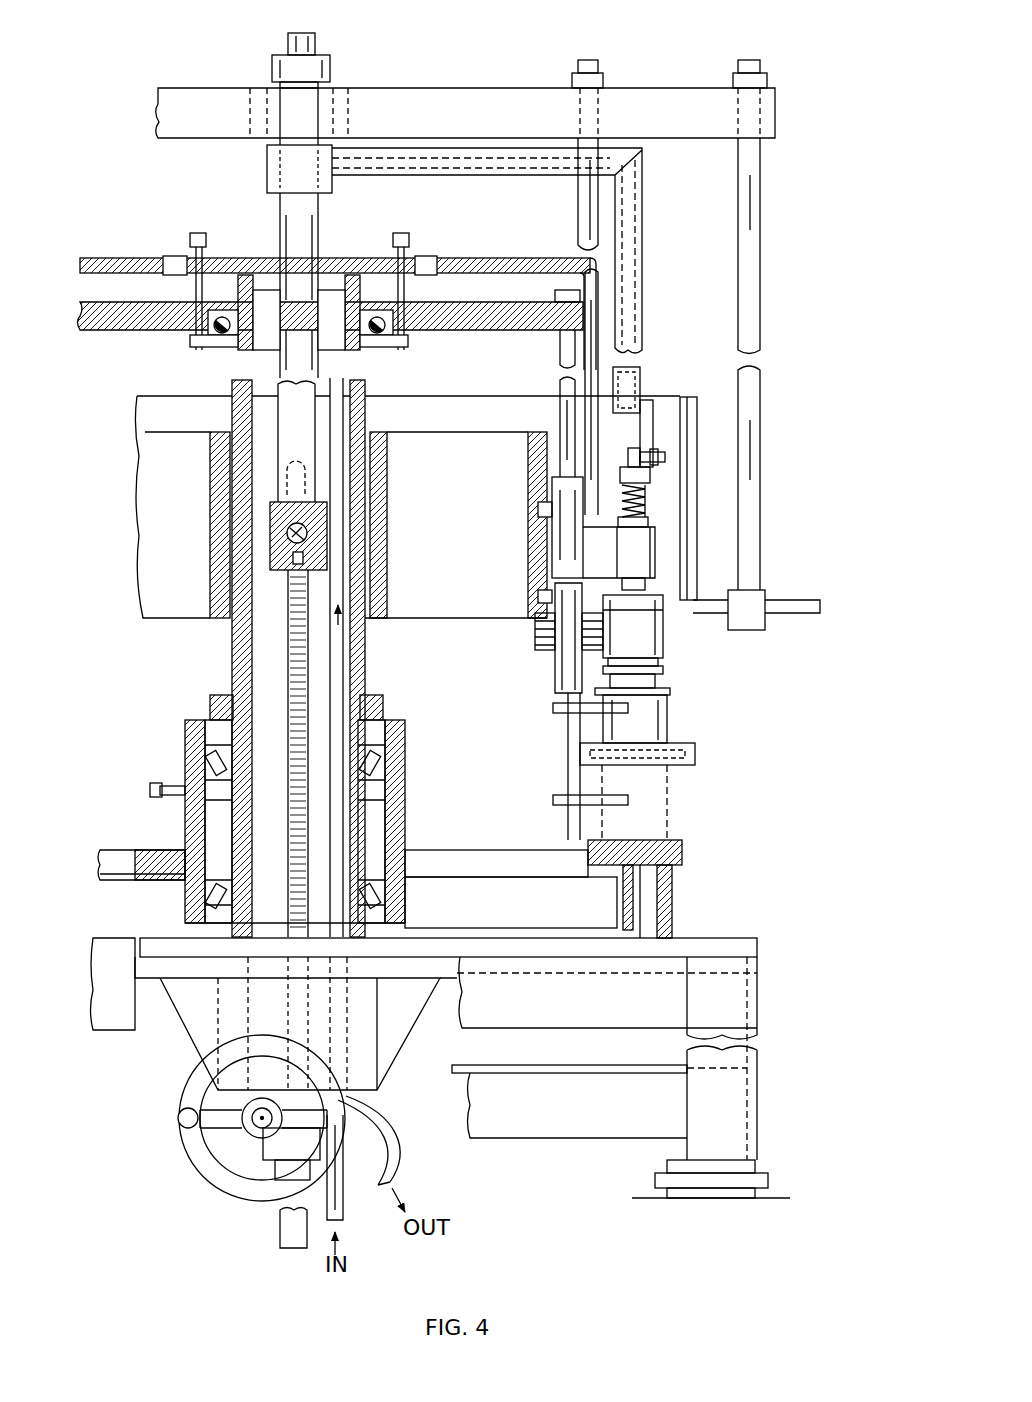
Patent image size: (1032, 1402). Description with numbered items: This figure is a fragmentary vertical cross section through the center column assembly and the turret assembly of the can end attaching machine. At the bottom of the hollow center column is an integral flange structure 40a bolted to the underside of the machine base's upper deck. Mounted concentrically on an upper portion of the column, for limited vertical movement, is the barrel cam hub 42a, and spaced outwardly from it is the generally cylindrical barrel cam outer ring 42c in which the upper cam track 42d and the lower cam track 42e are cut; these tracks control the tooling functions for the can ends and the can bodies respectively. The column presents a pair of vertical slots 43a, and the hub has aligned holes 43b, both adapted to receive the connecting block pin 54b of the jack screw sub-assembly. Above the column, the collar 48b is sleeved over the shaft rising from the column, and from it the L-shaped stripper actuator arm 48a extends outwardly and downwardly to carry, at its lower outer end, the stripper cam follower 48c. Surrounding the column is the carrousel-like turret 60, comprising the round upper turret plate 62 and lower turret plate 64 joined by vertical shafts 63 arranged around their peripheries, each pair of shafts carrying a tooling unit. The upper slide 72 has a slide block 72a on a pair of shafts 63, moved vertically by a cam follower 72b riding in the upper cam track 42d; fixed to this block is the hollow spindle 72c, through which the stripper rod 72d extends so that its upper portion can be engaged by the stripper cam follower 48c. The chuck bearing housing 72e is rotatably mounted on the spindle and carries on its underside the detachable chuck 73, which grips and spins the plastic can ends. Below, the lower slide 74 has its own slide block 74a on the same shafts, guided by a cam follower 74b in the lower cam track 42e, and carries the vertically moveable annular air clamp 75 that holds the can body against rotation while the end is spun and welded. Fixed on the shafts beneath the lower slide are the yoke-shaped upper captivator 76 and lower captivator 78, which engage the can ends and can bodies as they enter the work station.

The stripper actuator arm 48a is at (630, 210).
The collar 48b is at (290, 165).
The stripper cam follower 48c is at (647, 450).
The upper turret plate 62 is at (104, 333).
The vertical shafts 63 is at (568, 405).
The upper slide 72 is at (567, 553).
The slide block 72a is at (646, 452).
The cam follower 72b is at (553, 500).
The hollow spindle 72c is at (655, 567).
The stripper rod 72d is at (640, 497).
The chuck bearing housing 72e is at (645, 648).
The chuck 73 is at (652, 717).
The lower slide 74 is at (563, 672).
The slide block 74a is at (565, 650).
The cam follower 74b is at (547, 577).
The annular air clamp 75 is at (695, 753).
The upper captivator 76 is at (598, 710).
The lower captivator 78 is at (618, 805).
The barrel cam hub 42a is at (378, 616).
The barrel cam outer ring 42c is at (536, 540).
The upper cam track 42d is at (540, 508).
The lower cam track 42e is at (546, 600).
The slots 43a is at (282, 486).
The holes 43b is at (292, 538).
The connecting block pin 54b is at (290, 556).
The turret 60 is at (120, 846).
The lower turret plate 64 is at (153, 848).
The flange structure 40a is at (398, 1040).